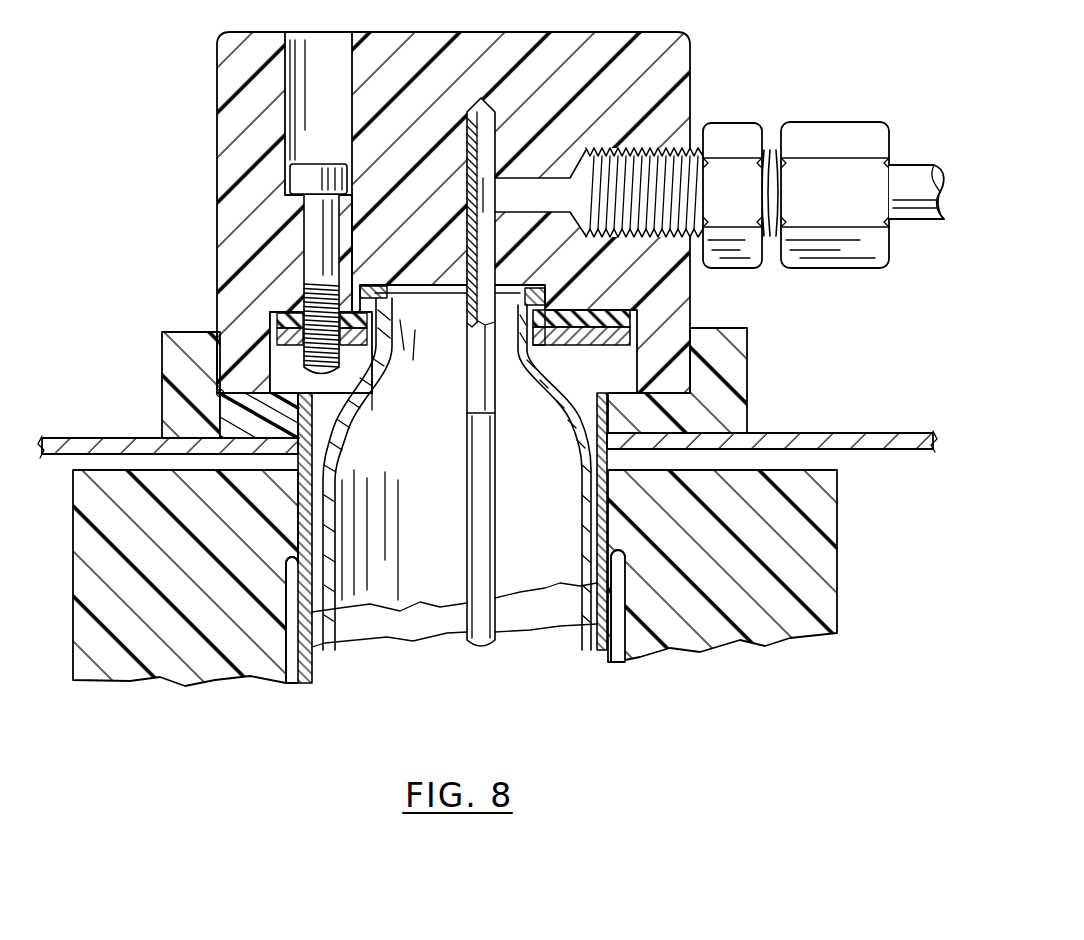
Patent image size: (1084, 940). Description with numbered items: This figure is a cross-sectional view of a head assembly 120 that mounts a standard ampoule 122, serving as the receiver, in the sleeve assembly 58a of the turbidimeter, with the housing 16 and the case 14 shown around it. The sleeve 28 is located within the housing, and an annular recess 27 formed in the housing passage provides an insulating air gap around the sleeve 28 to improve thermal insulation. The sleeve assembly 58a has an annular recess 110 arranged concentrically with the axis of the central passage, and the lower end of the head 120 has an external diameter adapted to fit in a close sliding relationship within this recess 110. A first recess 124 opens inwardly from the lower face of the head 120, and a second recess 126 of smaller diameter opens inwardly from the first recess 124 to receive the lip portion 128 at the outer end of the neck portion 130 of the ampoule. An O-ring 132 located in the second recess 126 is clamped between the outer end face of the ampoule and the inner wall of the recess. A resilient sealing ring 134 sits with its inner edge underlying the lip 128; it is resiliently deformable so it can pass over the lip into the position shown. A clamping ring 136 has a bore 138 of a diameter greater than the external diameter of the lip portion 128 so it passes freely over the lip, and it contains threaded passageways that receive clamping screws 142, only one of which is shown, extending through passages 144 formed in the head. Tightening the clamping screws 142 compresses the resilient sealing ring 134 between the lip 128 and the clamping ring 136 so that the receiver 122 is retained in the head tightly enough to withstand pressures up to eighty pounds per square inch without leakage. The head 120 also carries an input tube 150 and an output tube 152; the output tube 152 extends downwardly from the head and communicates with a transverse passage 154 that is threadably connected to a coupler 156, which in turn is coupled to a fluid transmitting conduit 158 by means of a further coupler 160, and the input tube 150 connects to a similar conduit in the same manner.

The case 14 is at (96, 438).
The housing 16 is at (86, 496).
The annular recess 27 is at (293, 666).
The sleeve 28 is at (312, 640).
The sleeve assembly 58a is at (174, 362).
The annular recess 110 is at (224, 350).
The head assembly 120 is at (228, 106).
The ampoule 122 is at (527, 621).
The first recess 124 is at (634, 353).
The second recess 126 is at (542, 292).
The lip portion 128 is at (372, 305).
The neck portion 130 is at (387, 338).
The O-ring 132 is at (371, 286).
The resilient sealing ring 134 is at (640, 302).
The clamping ring 136 is at (630, 330).
The bore 138 is at (543, 345).
The clamping screws 142 is at (302, 218).
The passages 144 is at (315, 193).
The input tube 150 is at (478, 525).
The output tube 152 is at (474, 390).
The transverse passage 154 is at (527, 187).
The coupler 156 is at (726, 128).
The fluid transmitting conduit 158 is at (911, 168).
The coupler 160 is at (823, 128).